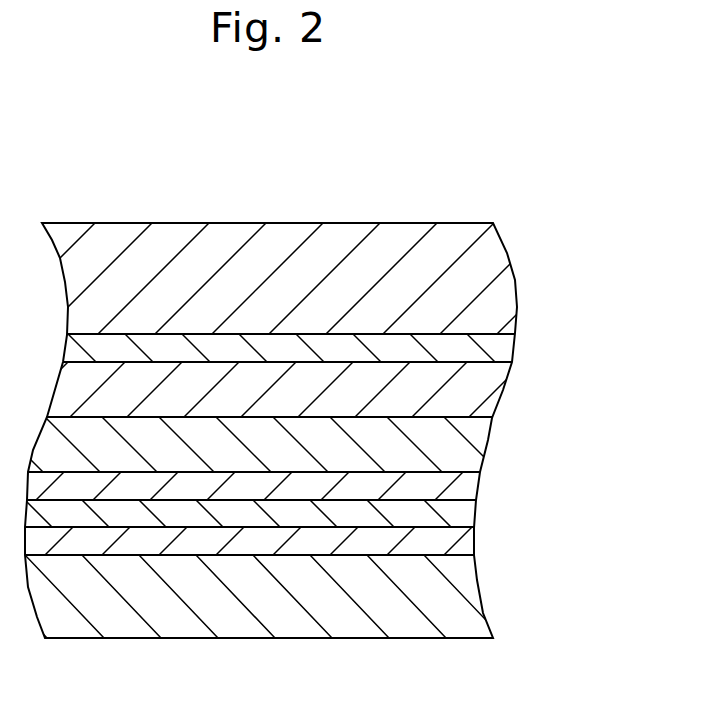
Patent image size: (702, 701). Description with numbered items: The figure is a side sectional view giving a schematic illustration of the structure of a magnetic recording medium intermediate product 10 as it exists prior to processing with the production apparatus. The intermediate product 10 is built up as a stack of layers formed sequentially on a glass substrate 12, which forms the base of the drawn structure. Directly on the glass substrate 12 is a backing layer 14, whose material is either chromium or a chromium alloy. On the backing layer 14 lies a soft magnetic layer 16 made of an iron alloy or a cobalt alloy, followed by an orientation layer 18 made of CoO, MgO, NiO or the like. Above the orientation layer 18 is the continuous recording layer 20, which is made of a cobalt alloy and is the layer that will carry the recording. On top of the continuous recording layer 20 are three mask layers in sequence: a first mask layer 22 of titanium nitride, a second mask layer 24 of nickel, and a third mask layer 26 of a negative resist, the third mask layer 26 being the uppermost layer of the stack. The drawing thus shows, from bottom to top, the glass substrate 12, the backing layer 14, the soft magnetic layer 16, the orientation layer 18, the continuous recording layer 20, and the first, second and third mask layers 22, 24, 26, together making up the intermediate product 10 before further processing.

The magnetic recording medium intermediate product 10 is at (242, 183).
The glass substrate 12 is at (477, 588).
The backing layer 14 is at (474, 540).
The soft magnetic layer 16 is at (475, 518).
The orientation layer 18 is at (477, 490).
The continuous recording layer 20 is at (486, 450).
The first mask layer 22 is at (506, 397).
The second mask layer 24 is at (513, 348).
The third mask layer 26 is at (515, 280).